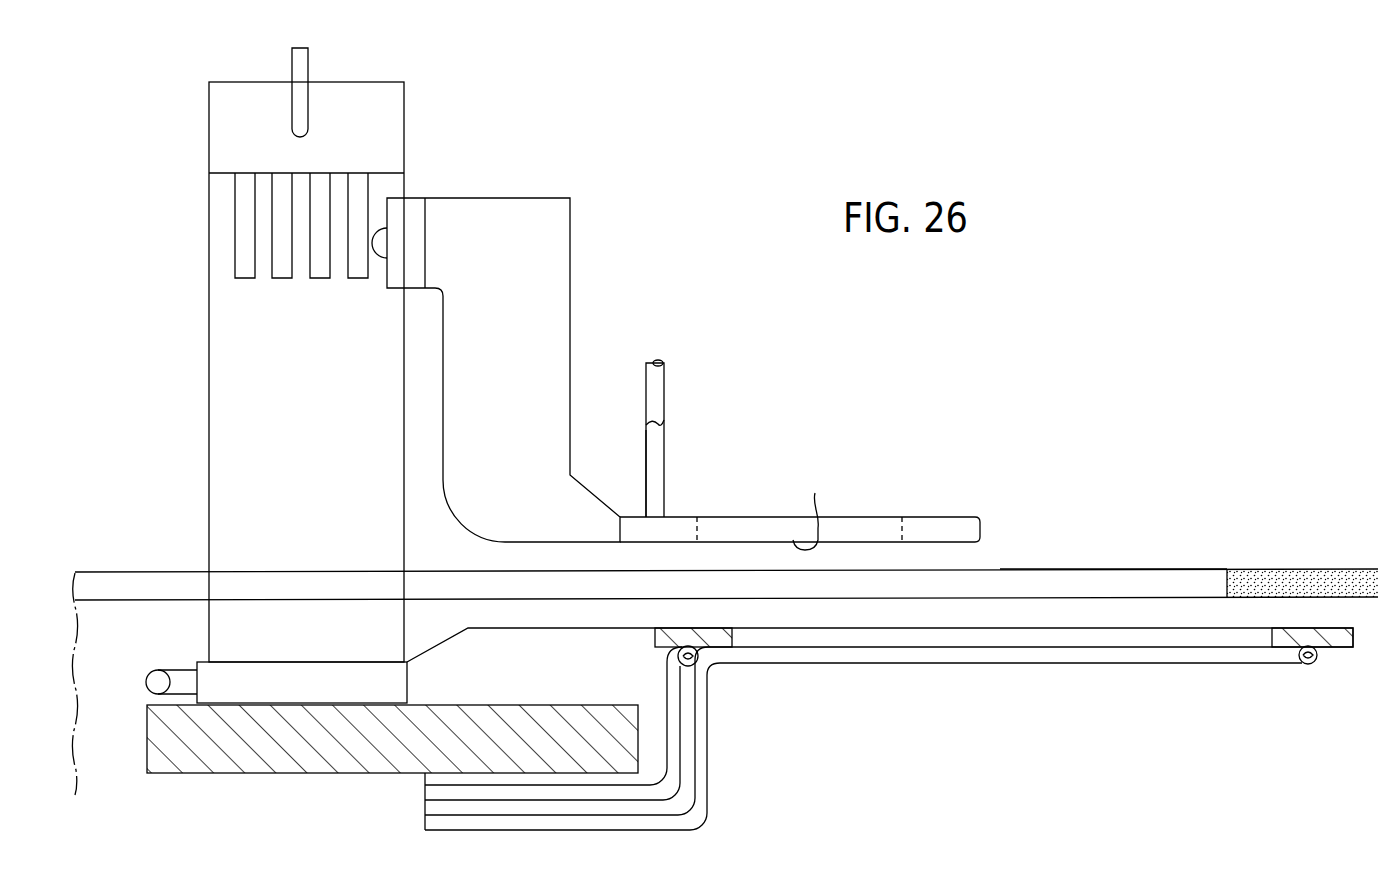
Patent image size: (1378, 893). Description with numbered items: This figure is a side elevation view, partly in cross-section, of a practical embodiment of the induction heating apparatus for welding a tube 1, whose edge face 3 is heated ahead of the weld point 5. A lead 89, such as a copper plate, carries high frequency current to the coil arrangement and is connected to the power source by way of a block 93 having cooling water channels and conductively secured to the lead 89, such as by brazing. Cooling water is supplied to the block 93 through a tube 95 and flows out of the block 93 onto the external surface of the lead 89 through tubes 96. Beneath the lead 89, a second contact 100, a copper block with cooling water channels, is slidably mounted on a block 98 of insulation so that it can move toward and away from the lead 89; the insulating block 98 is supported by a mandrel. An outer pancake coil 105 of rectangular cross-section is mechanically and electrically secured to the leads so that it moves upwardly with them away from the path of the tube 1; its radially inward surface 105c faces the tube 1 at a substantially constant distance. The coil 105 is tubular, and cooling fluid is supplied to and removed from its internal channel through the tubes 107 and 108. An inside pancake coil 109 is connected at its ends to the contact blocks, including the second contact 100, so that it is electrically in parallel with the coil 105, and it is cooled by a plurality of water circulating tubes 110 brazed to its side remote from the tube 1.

The tube 1 is at (1144, 568).
The edge face 3 is at (985, 580).
The weld point 5 is at (1228, 575).
The lead 89 is at (222, 307).
The block 93 is at (393, 102).
The tube 95 is at (303, 62).
The tubes 96 is at (283, 270).
The block of insulation 98 is at (271, 765).
The second contact 100 is at (303, 670).
The outer pancake coil 105 is at (940, 523).
The surface 105c is at (807, 508).
The tube 107 is at (658, 447).
The tube 108 is at (657, 383).
The inside pancake coil 109 is at (996, 638).
The fluid circulating tubes 110 is at (680, 763).